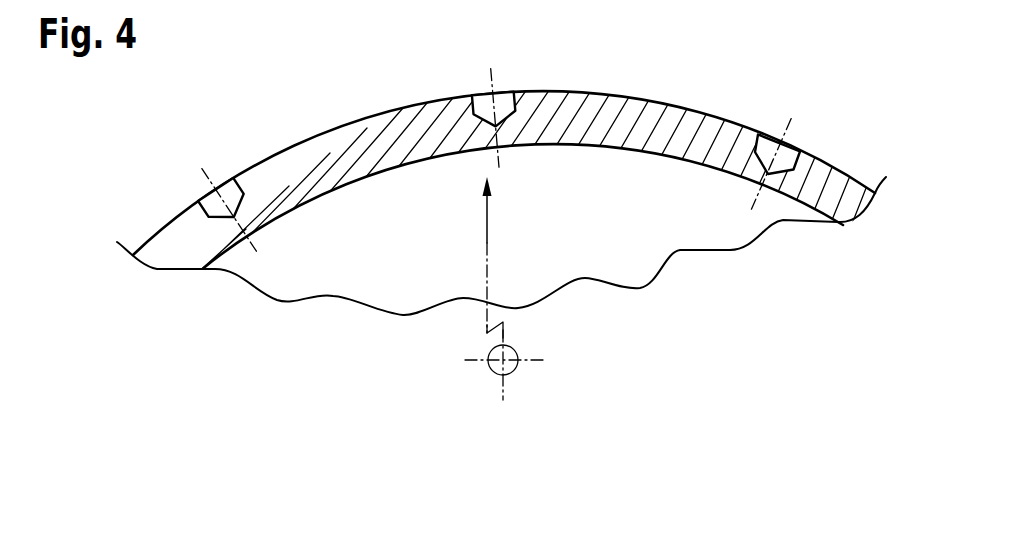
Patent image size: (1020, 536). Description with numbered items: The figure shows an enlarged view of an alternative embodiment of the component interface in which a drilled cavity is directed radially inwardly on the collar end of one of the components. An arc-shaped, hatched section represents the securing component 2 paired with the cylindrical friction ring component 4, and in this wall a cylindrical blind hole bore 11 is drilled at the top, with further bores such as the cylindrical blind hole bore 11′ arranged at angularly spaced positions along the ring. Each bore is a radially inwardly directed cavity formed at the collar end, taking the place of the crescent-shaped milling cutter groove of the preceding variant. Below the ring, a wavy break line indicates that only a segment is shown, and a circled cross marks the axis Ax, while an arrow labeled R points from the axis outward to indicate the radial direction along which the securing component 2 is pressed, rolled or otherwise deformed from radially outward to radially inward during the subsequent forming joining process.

The securing component 2 is at (668, 130).
The cylindrical friction ring component 4 is at (519, 190).
The cylindrical blind hole bore 11 is at (503, 100).
The cylindrical blind hole bore 11′ is at (761, 166).
The radial direction R is at (500, 207).
The axis Ax is at (503, 362).